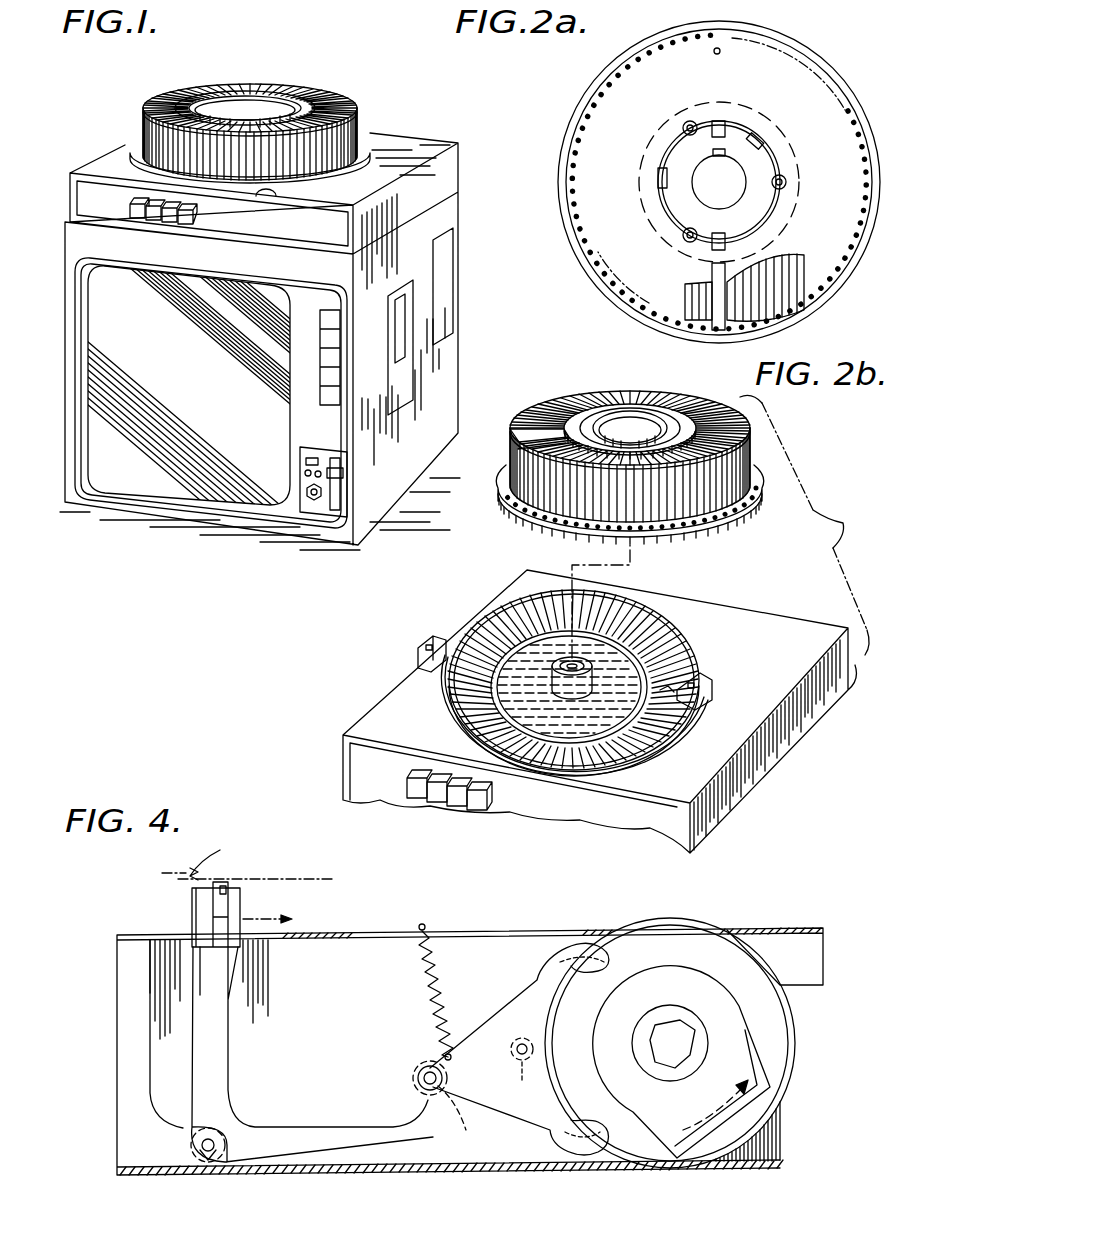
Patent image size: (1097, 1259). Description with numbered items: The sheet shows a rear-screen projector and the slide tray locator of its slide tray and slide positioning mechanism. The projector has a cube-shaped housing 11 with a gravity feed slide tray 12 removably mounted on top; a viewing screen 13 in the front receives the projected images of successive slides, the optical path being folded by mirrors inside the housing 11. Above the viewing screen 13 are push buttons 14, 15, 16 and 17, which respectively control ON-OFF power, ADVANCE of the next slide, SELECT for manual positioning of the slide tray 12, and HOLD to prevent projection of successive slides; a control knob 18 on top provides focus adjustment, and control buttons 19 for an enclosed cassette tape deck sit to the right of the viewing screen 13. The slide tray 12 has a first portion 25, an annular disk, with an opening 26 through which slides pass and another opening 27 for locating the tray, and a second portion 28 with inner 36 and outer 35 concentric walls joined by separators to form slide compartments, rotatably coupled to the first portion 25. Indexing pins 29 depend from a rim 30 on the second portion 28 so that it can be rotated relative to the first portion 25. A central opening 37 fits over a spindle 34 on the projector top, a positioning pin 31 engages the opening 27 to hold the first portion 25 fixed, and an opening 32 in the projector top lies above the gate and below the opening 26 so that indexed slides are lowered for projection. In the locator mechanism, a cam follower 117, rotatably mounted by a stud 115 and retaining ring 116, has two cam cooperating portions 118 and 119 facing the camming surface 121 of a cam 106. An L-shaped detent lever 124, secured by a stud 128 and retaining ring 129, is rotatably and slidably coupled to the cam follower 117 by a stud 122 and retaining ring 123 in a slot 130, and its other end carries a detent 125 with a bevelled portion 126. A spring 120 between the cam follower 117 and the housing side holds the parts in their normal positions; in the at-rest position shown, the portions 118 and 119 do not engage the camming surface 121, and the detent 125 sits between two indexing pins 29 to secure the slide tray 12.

In FIG. 1, the housing 11 is at (60, 280).
In FIG. 1, the slide tray 12 is at (334, 88).
In FIG. 1, the viewing screen 13 is at (176, 383).
In FIG. 1, the push button 14 is at (128, 206).
In FIG. 2B, the push button 14 is at (412, 799).
In FIG. 1, the push button 15 is at (140, 199).
In FIG. 2B, the push button 15 is at (432, 803).
In FIG. 1, the push button 16 is at (168, 223).
In FIG. 2B, the push button 16 is at (455, 807).
In FIG. 1, the push button 17 is at (197, 211).
In FIG. 2B, the push button 17 is at (476, 811).
In FIG. 1, the control knob 18 is at (263, 195).
In FIG. 1, the control buttons 19 is at (312, 353).
In FIG. 2A, the first portion 25 is at (636, 112).
In FIG. 2A, the opening 26 is at (712, 302).
In FIG. 2A, the opening 27 is at (724, 50).
In FIG. 2B, the second portion 28 is at (643, 404).
In FIG. 2A, the indexing pins 29 is at (577, 182).
In FIG. 2B, the indexing pins 29 is at (742, 554).
In FIG. 4, the indexing pins 29 is at (238, 888).
In FIG. 2B, the rim 30 is at (506, 478).
In FIG. 4, the rim 30 is at (232, 868).
In FIG. 2B, the positioning pin 31 is at (447, 642).
In FIG. 2B, the opening 32 is at (712, 690).
In FIG. 2B, the spindle 34 is at (592, 666).
In FIG. 2B, the outer concentric wall 35 is at (742, 400).
In FIG. 2B, the inner concentric wall 36 is at (586, 412).
In FIG. 2A, the opening 37 is at (695, 188).
In FIG. 4, the cam 106 is at (687, 957).
In FIG. 4, the stud 115 is at (512, 1054).
In FIG. 4, the retaining ring 116 is at (503, 1081).
In FIG. 4, the cam follower 117 is at (503, 1013).
In FIG. 4, the cam cooperating portion 118 is at (578, 944).
In FIG. 4, the cam cooperating portion 119 is at (578, 1154).
In FIG. 4, the spring 120 is at (416, 953).
In FIG. 4, the camming surface 121 is at (752, 1053).
In FIG. 4, the stud 122 is at (425, 1066).
In FIG. 4, the retaining ring 123 is at (418, 1083).
In FIG. 4, the L-shaped detent lever 124 is at (233, 1064).
In FIG. 4, the detent 125 is at (245, 904).
In FIG. 4, the bevelled portion 126 is at (192, 900).
In FIG. 4, the stud 128 is at (206, 1152).
In FIG. 4, the retaining ring 129 is at (216, 1160).
In FIG. 4, the slot 130 is at (464, 1120).